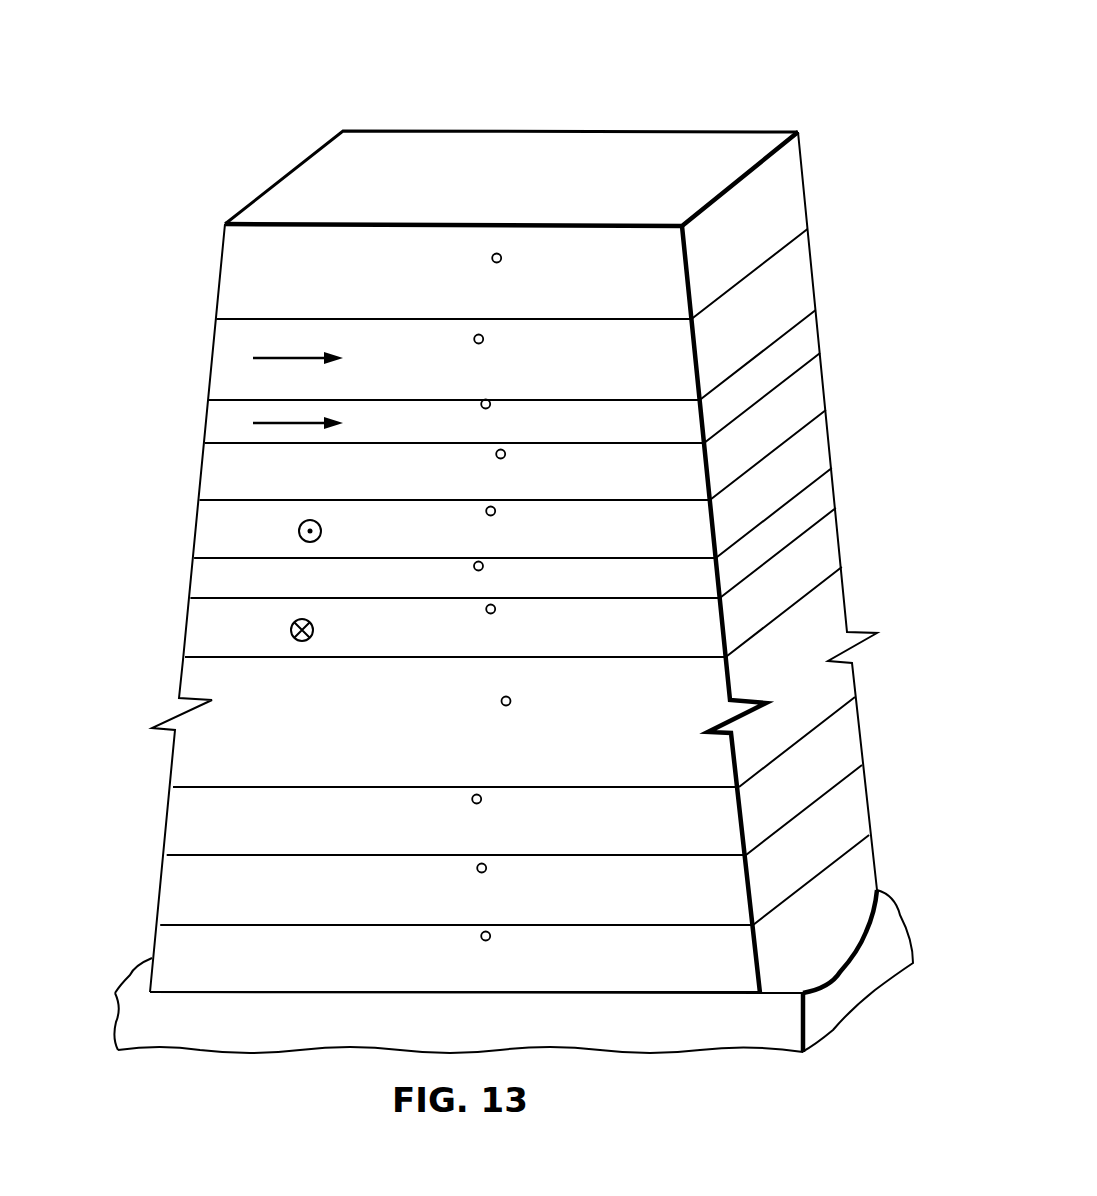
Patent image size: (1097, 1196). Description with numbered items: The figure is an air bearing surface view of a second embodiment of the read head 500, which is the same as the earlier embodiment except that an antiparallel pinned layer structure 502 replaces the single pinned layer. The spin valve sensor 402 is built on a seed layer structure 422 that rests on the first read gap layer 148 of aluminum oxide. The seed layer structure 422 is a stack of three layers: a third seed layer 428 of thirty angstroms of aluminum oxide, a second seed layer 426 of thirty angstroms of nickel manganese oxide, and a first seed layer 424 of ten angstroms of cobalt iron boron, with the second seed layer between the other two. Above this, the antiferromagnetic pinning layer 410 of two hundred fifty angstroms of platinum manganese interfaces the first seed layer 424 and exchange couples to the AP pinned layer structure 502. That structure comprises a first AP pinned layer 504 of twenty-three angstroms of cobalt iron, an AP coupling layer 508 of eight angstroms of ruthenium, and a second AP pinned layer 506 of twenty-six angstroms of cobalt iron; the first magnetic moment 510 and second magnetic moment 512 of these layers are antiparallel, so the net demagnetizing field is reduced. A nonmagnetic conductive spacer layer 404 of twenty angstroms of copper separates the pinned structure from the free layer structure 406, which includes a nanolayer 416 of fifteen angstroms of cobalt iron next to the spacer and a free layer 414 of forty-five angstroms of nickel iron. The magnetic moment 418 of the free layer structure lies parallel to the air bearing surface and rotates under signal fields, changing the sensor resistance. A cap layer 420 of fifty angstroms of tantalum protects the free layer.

The read head embodiment 500 is at (706, 88).
The antiparallel pinned layer structure 502 is at (147, 640).
The free layer structure 406 is at (173, 443).
The spin valve sensor 402 is at (155, 785).
The seed layer structure 422 is at (92, 800).
The cap layer 420 is at (659, 293).
The free layer 414 is at (659, 374).
The nanolayer 416 is at (659, 439).
The magnetic moment of free layer structure 418 is at (276, 358).
The nonmagnetic conductive spacer layer 404 is at (659, 489).
The second AP pinned layer 506 is at (659, 546).
The AP coupling layer 508 is at (659, 601).
The first AP pinned layer 504 is at (659, 644).
The second magnetic moment 512 is at (299, 531).
The first magnetic moment 510 is at (291, 630).
The antiferromagnetic pinning layer 410 is at (662, 736).
The first seed layer 424 is at (659, 834).
The second seed layer 426 is at (659, 903).
The third seed layer 428 is at (659, 969).
The first read gap layer 148 is at (656, 1034).